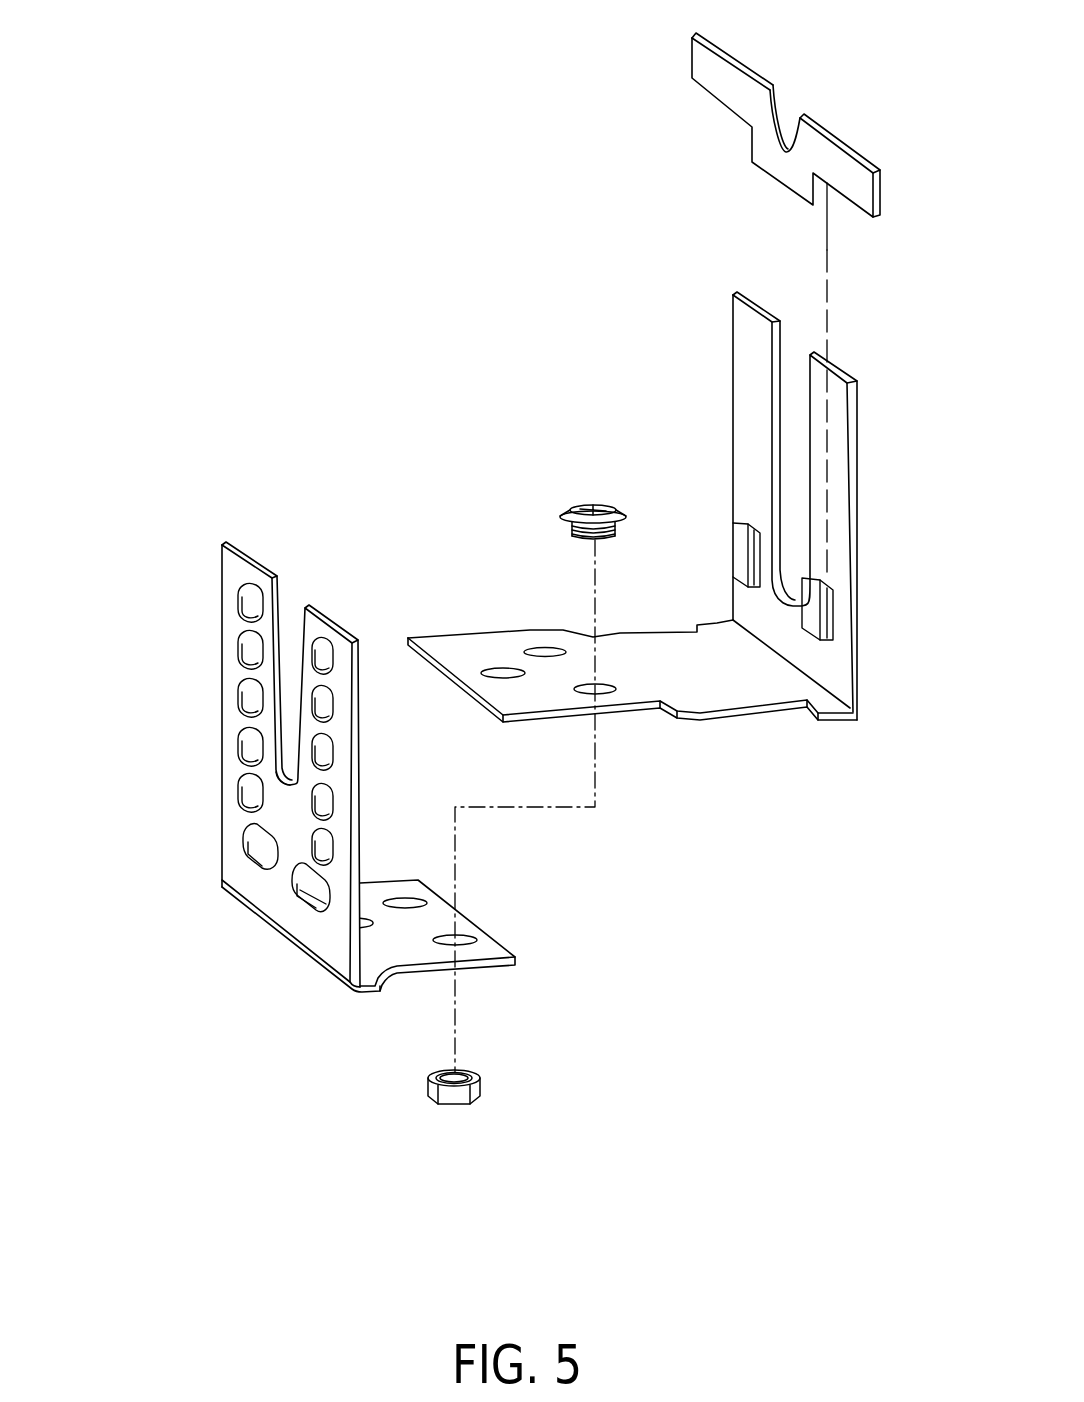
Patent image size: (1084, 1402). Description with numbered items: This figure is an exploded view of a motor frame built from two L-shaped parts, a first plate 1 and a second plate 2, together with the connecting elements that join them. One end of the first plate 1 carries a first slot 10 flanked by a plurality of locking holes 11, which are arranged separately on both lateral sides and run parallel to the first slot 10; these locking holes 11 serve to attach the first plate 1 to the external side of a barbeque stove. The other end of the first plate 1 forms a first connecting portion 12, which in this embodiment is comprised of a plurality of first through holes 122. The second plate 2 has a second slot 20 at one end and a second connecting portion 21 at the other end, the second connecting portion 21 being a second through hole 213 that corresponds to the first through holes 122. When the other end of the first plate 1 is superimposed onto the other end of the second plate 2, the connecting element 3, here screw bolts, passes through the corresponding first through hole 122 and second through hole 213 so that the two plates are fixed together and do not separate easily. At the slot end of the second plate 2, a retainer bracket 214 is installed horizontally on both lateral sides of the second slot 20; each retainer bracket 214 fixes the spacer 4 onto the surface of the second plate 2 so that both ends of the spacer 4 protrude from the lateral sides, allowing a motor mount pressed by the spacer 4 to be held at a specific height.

The first plate 1 is at (372, 767).
The first slot 10 is at (297, 622).
The locking holes 11 is at (247, 777).
The first connecting portion 12 is at (495, 904).
The first through holes 122 is at (405, 903).
The second plate 2 is at (623, 465).
The second slot 20 is at (745, 464).
The second connecting portion 21 is at (623, 609).
The second through hole 213 is at (540, 648).
The retainer bracket 214 is at (737, 545).
The connecting element 3 is at (570, 512).
The spacer 4 is at (750, 90).